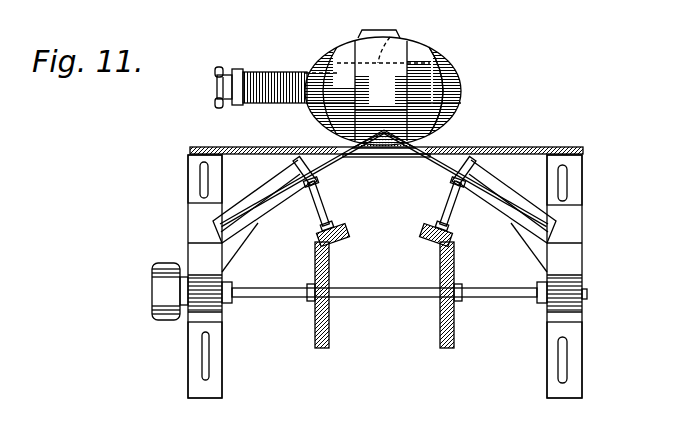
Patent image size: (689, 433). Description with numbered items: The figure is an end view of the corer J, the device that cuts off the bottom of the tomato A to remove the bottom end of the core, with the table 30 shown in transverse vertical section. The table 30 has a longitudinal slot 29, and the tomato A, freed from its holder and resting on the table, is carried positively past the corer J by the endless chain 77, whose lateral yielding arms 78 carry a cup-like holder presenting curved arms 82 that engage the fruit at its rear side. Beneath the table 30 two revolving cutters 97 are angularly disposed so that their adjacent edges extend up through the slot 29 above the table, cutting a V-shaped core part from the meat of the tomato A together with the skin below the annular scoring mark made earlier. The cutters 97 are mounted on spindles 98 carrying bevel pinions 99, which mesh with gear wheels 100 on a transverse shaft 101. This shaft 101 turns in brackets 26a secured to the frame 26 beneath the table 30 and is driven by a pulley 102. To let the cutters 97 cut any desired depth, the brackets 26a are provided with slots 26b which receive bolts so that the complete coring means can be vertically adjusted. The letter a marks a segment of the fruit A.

The framework 26 is at (188, 246).
The brackets 26a is at (593, 331).
The slots 26b is at (592, 361).
The longitudinal slot 29 is at (395, 158).
The table 30 is at (548, 147).
The endless chain 77 is at (217, 86).
The lateral yielding arms 78 is at (264, 74).
The curved arms 82 is at (386, 31).
The revolving cutters 97 is at (341, 160).
The spindles 98 is at (317, 206).
The bevel pinions 99 is at (420, 233).
The gear wheels 100 is at (329, 322).
The transverse shaft 101 is at (278, 288).
The pulley 102 is at (152, 292).
The ball segment a is at (417, 50).
The tomatoes A is at (384, 91).
The corer J is at (144, 121).